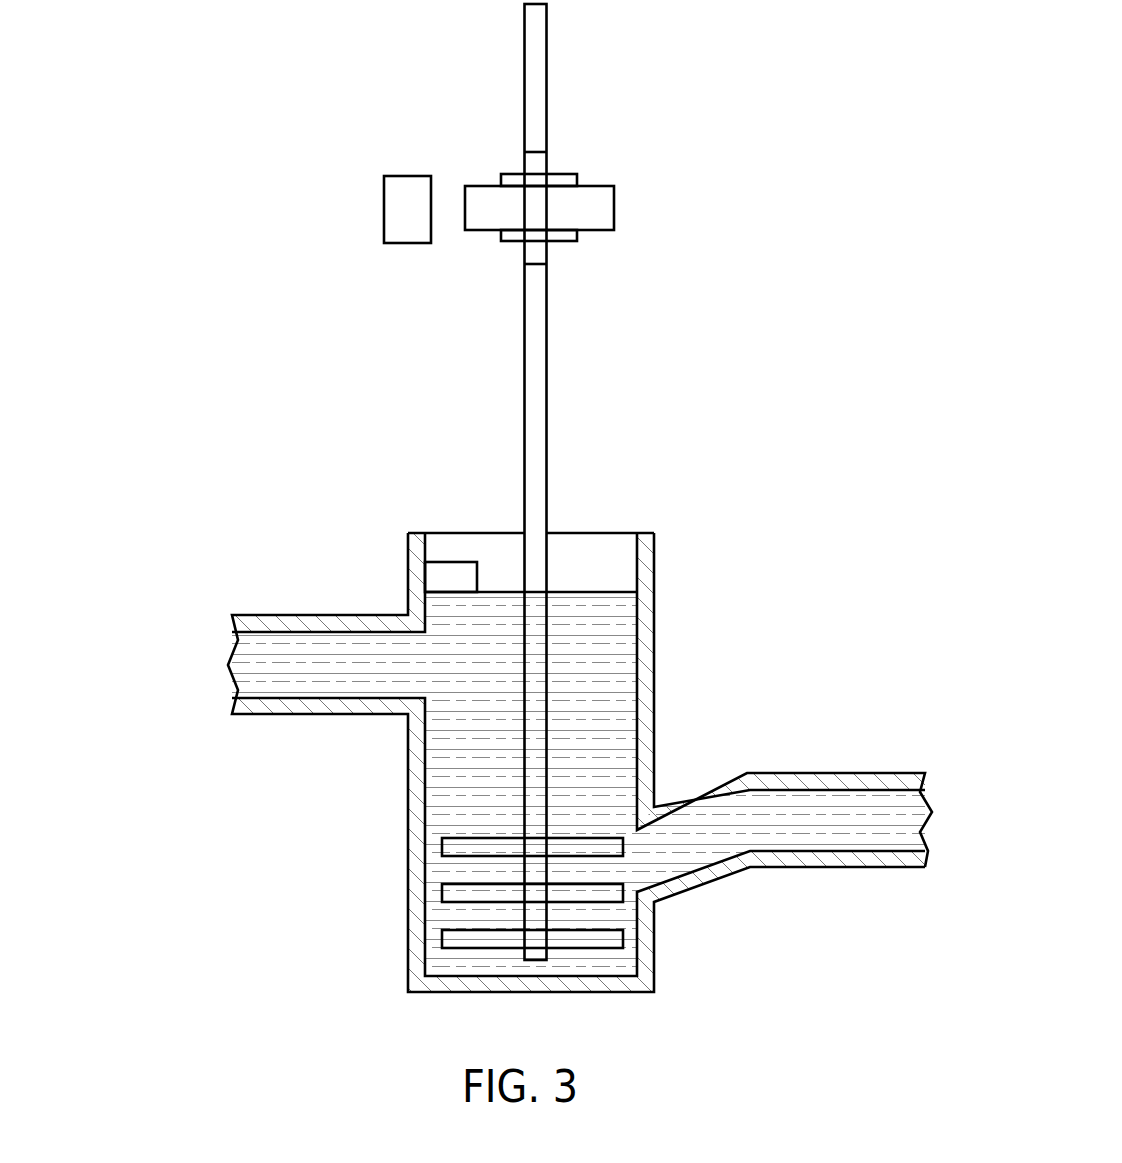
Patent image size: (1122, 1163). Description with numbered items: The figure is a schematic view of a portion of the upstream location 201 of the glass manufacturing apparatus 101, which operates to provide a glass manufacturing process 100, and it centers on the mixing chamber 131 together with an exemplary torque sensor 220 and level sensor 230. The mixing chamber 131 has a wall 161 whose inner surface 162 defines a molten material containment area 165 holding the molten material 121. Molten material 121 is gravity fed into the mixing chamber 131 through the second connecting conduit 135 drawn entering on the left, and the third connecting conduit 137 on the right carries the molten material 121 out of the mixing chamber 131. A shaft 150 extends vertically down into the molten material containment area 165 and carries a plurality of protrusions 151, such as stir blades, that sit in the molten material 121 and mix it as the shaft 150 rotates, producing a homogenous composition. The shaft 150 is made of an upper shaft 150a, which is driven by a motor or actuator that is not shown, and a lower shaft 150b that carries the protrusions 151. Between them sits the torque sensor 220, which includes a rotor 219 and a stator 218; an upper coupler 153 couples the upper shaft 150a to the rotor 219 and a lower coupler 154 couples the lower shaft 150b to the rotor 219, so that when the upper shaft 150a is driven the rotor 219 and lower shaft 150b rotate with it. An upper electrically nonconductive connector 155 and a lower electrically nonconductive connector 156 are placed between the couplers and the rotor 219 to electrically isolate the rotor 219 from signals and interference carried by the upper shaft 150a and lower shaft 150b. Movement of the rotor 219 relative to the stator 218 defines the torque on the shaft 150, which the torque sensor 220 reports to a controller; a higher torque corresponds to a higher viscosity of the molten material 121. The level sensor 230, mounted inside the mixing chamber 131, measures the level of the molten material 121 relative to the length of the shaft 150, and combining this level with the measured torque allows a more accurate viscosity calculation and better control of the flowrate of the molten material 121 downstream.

The glass manufacturing process 100 is at (501, 498).
The glass manufacturing apparatus 101 is at (501, 498).
The molten material 121 is at (438, 817).
The mixing chamber 131 is at (413, 541).
The second connecting conduit 135 is at (281, 624).
The third connecting conduit 137 is at (713, 797).
The shaft 150 is at (541, 465).
The upper shaft 150a is at (541, 37).
The lower shaft 150b is at (541, 341).
The plurality of protrusions 151 is at (450, 938).
The upper coupler 153 is at (541, 156).
The lower coupler 154 is at (541, 258).
The upper electrically nonconductive connector 155 is at (576, 181).
The lower electrically nonconductive connector 156 is at (578, 236).
The wall 161 is at (648, 568).
The inner surface 162 is at (629, 540).
The molten material containment area 165 is at (441, 760).
The upstream location 201 is at (579, 498).
The stator 218 is at (412, 182).
The rotor 219 is at (607, 210).
The torque sensor 220 is at (437, 170).
The level sensor 230 is at (445, 573).